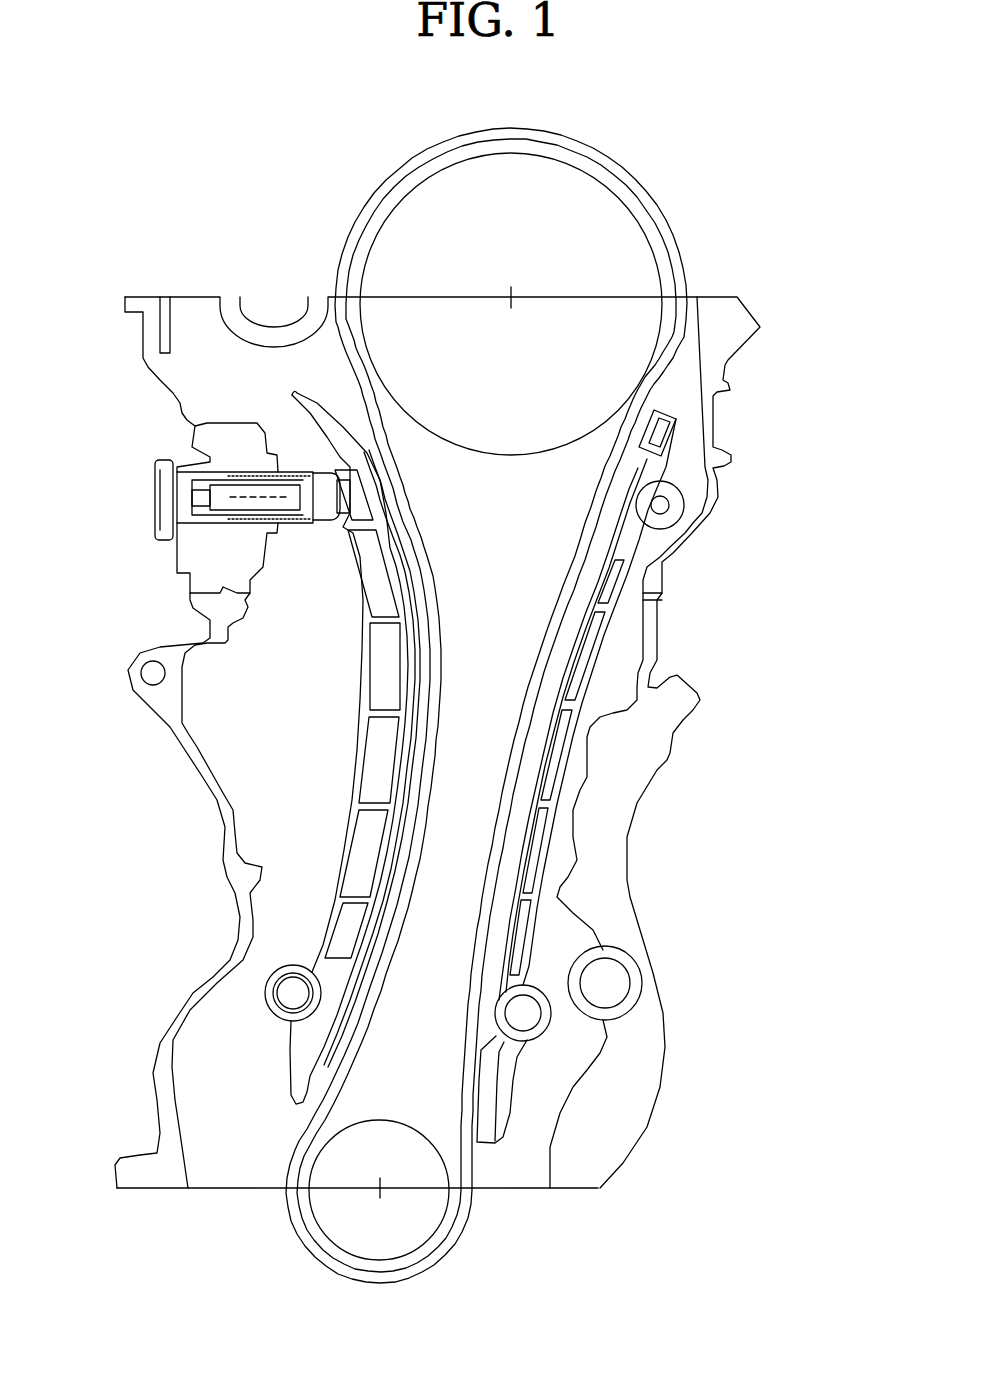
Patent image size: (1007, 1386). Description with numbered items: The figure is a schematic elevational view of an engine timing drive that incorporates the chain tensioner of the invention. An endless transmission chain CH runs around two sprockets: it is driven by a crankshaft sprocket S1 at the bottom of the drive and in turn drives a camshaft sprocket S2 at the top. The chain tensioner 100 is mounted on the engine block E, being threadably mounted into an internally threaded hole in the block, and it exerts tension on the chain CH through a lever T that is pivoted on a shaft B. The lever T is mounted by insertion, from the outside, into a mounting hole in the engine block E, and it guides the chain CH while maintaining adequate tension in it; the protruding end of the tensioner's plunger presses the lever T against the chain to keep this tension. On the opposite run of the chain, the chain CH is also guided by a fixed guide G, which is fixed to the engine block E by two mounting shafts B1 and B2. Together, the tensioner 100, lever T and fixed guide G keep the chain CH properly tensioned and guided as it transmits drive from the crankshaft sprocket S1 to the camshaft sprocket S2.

The chain tensioner 100 is at (150, 491).
The crankshaft sprocket S1 is at (333, 1202).
The camshaft sprocket S2 is at (617, 220).
The transmission chain CH is at (653, 392).
The lever T is at (400, 768).
The fixed guide G is at (548, 748).
The shaft B is at (293, 993).
The mounting shaft B1 is at (660, 505).
The mounting shaft B2 is at (523, 1013).
The engine block E is at (150, 660).